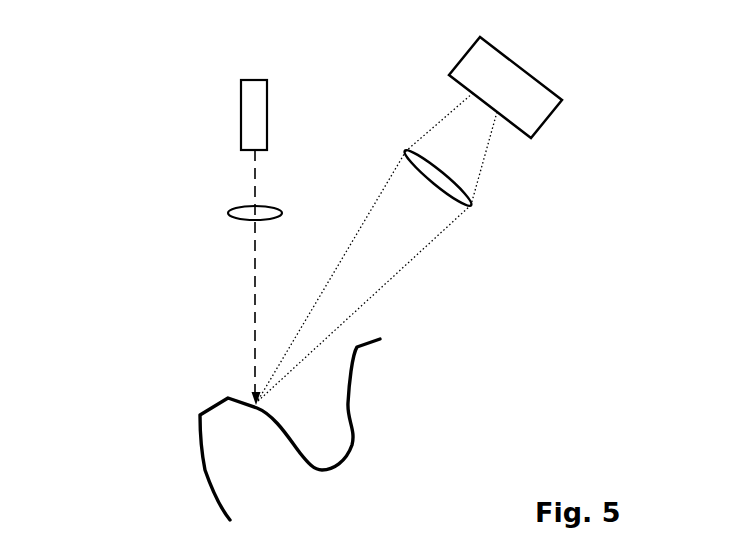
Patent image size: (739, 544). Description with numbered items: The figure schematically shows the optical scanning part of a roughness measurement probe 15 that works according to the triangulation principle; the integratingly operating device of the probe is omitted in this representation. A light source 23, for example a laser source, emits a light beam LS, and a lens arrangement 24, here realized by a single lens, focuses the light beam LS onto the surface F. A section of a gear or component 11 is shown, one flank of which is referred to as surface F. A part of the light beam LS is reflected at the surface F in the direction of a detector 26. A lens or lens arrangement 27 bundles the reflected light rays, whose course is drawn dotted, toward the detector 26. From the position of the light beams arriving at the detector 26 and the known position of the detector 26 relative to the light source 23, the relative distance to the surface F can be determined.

The roughness measurement probe 15 is at (108, 42).
The light source 23 is at (244, 112).
The lens arrangement 24 is at (228, 210).
The light beam LS is at (253, 268).
The detector 26 is at (480, 50).
The lens arrangement 27 is at (474, 204).
The surface F is at (237, 398).
The gear or component 11 is at (210, 482).